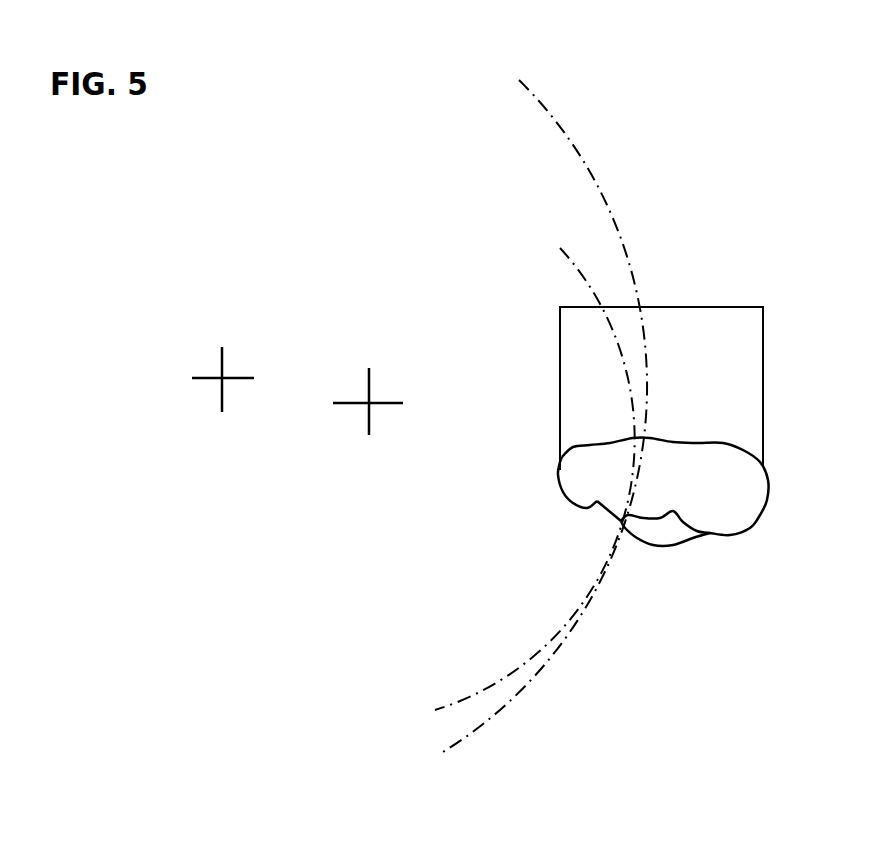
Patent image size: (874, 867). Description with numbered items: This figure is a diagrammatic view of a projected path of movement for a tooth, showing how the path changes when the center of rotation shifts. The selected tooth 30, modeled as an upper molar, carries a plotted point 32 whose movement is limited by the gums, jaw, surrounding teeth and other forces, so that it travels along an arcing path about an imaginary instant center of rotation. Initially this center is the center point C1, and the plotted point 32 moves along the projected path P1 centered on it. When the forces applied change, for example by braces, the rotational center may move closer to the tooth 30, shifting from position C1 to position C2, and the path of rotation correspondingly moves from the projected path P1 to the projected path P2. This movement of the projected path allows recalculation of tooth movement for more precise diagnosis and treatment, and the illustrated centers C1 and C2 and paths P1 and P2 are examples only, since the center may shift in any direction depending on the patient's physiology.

The selected tooth 30 is at (753, 373).
The plotted point 32 is at (621, 522).
The center point C1 is at (211, 378).
The shifted center position C2 is at (373, 400).
The projected path P1 is at (553, 119).
The shifted projected path P2 is at (475, 695).